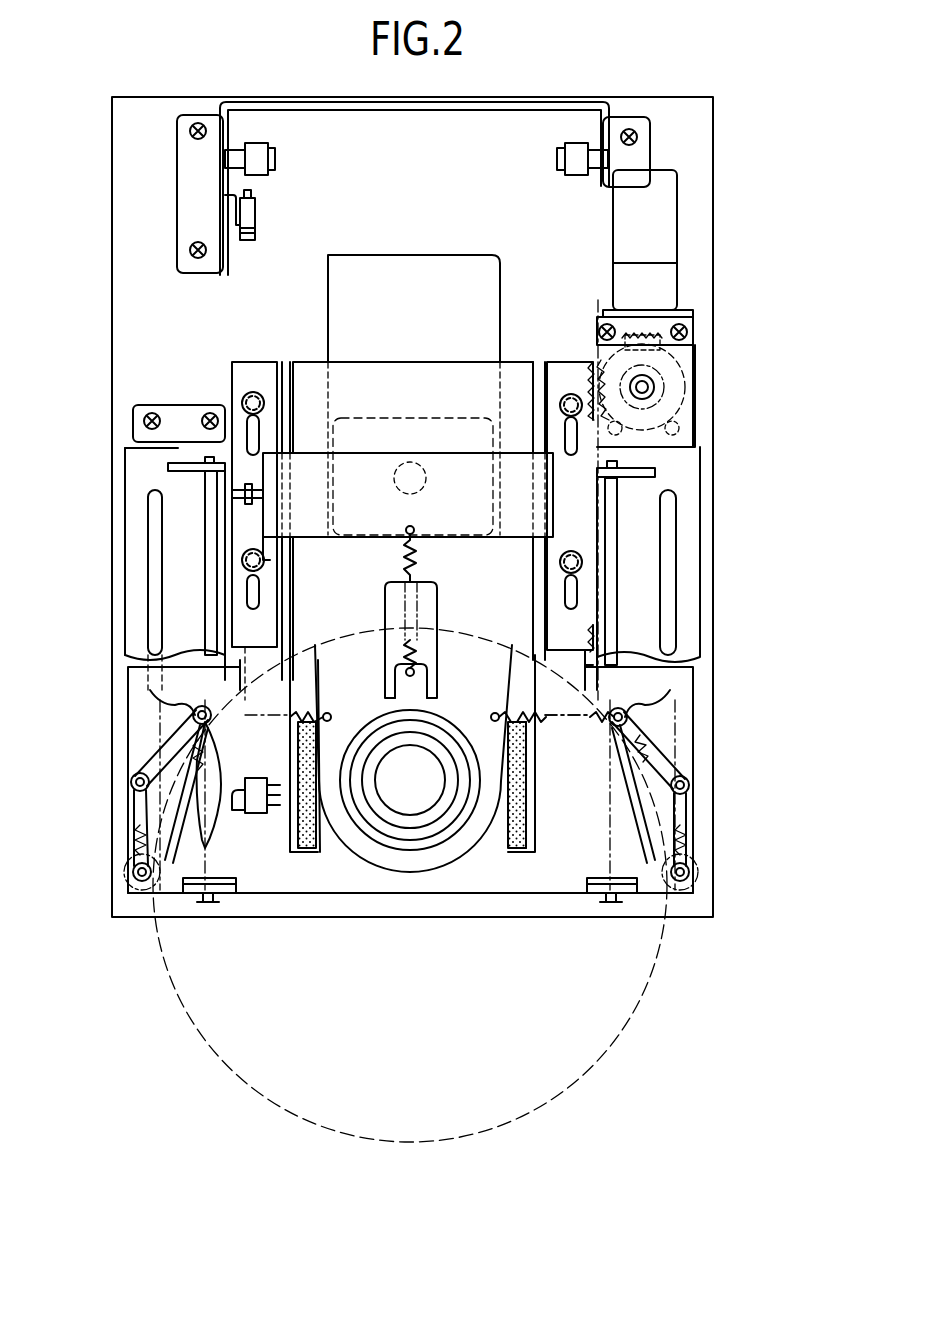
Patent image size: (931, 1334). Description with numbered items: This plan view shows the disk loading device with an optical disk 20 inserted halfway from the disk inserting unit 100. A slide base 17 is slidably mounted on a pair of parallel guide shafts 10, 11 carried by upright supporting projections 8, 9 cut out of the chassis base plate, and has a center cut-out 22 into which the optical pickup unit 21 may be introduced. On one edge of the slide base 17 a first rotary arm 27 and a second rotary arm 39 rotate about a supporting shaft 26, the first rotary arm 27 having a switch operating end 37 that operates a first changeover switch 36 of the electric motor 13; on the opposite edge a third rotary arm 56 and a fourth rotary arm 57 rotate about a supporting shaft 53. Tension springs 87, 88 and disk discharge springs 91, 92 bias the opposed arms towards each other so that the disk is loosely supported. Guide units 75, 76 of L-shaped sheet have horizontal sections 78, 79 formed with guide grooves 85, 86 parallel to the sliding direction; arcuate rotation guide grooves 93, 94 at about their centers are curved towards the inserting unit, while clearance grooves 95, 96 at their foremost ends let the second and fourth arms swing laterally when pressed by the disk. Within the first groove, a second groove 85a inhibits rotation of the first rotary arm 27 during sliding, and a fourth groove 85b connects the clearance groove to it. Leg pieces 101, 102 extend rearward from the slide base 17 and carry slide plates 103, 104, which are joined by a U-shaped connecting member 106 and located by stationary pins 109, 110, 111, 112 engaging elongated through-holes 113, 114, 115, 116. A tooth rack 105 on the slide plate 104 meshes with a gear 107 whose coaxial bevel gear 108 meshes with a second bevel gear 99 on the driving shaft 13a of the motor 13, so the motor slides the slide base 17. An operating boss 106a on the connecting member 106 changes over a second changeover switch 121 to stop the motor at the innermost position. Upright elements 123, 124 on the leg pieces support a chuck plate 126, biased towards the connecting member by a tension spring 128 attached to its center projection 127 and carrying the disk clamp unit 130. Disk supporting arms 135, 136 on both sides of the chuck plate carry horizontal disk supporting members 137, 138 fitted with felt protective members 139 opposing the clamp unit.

The upright supporting projection 8 is at (200, 468).
The upright supporting projection 9 is at (207, 900).
The guide shaft 10 is at (210, 588).
The guide shaft 11 is at (612, 582).
The electric motor 13 is at (670, 200).
The driving shaft 13a is at (655, 325).
The slide base 17 is at (312, 892).
The optical disk 20 is at (592, 1066).
The optical pickup unit 21 is at (410, 418).
The center cut-out 22 is at (492, 852).
The supporting shaft 26 is at (132, 786).
The first rotary arm 27 is at (170, 752).
The first changeover switch 36 is at (256, 816).
The switch operating end 37 is at (205, 850).
The second rotary arm 39 is at (136, 873).
The supporting shaft 53 is at (689, 785).
The third rotary arm 56 is at (648, 742).
The fourth rotary arm 57 is at (689, 872).
The guide unit 75 is at (135, 625).
The guide unit 76 is at (687, 490).
The horizontal section 78 is at (140, 520).
The horizontal section 79 is at (640, 602).
The guide groove 85 is at (150, 615).
The second groove 85a is at (156, 568).
The slot portion 85b is at (190, 728).
The guide groove 86 is at (670, 532).
The tension spring 87 is at (146, 840).
The tension spring 88 is at (688, 838).
The disk discharge spring 91 is at (245, 675).
The disk discharge spring 92 is at (600, 728).
The rotation guide groove 93 is at (193, 712).
The rotation guide groove 94 is at (627, 714).
The clearance groove 95 is at (130, 882).
The clearance groove 96 is at (676, 890).
The second bevel gear 99 is at (660, 378).
The disk inserting unit 100 is at (380, 880).
The leg piece 101 is at (238, 663).
The leg piece 102 is at (575, 665).
The slide plate 103 is at (270, 632).
The slide plate 104 is at (532, 493).
The tooth rack 105 is at (600, 420).
The U-shaped connecting member 106 is at (303, 385).
The operating boss 106a is at (275, 483).
The gear 107 is at (678, 400).
The bevel gear 108 is at (655, 388).
The stationary pin 109 is at (248, 393).
The stationary pin 110 is at (250, 552).
The stationary pin 111 is at (571, 398).
The stationary pin 112 is at (560, 563).
The elongated through-hole 113 is at (248, 415).
The elongated through-hole 114 is at (250, 585).
The elongated through-hole 115 is at (562, 440).
The elongated through-hole 116 is at (566, 600).
The second changeover switch 121 is at (250, 218).
The upright element 123 is at (278, 362).
The upright element 124 is at (540, 368).
The chuck plate 126 is at (318, 362).
The center projection 127 is at (418, 688).
The tension spring 128 is at (405, 560).
The disk clamp unit 130 is at (408, 825).
The disk supporting arm 135 is at (305, 844).
The disk supporting arm 136 is at (532, 840).
The disk supporting member 137 is at (322, 858).
The disk supporting member 138 is at (522, 815).
The felt protective member 139 is at (313, 755).